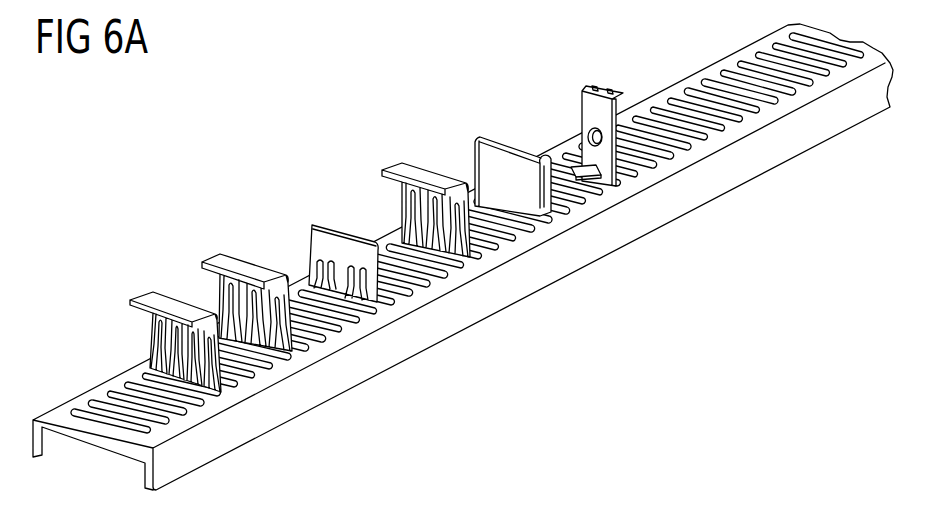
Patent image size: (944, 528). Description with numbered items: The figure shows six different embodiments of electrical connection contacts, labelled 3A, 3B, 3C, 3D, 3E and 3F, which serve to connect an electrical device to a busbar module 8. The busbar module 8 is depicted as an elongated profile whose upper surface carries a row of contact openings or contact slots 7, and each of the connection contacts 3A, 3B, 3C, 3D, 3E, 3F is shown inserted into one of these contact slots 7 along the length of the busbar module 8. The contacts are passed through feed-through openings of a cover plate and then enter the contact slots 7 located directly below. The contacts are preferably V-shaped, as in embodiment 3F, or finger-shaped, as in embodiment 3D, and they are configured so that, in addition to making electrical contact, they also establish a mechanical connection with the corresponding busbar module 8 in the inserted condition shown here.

The electrical connection contact 3A is at (143, 297).
The electrical connection contact 3B is at (215, 258).
The electrical connection contact 3C is at (313, 234).
The electrical connection contact 3D is at (400, 168).
The electrical connection contact 3E is at (479, 134).
The electrical connection contact 3F is at (591, 86).
The contact slot 7 is at (98, 398).
The busbar module 8 is at (662, 206).